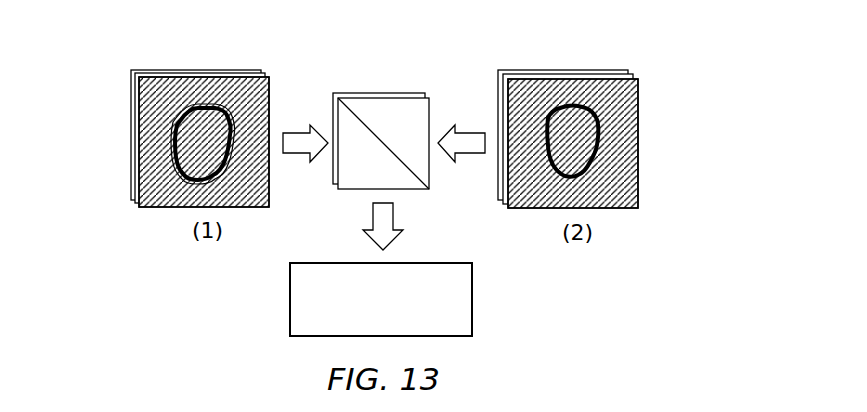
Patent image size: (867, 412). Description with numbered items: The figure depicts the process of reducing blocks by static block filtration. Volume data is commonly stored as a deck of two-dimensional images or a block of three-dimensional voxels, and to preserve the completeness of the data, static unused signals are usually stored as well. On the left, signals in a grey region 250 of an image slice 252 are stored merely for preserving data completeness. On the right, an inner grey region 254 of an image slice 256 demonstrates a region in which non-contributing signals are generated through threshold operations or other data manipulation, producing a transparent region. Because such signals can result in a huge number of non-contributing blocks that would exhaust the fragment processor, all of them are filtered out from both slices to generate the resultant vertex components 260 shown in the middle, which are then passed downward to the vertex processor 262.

The grey region 250 is at (138, 140).
The image slice 252 is at (203, 107).
The inner grey region 254 is at (575, 123).
The image slice 256 is at (597, 121).
The resultant vertex components 260 is at (378, 98).
The vertex processor 262 is at (472, 297).